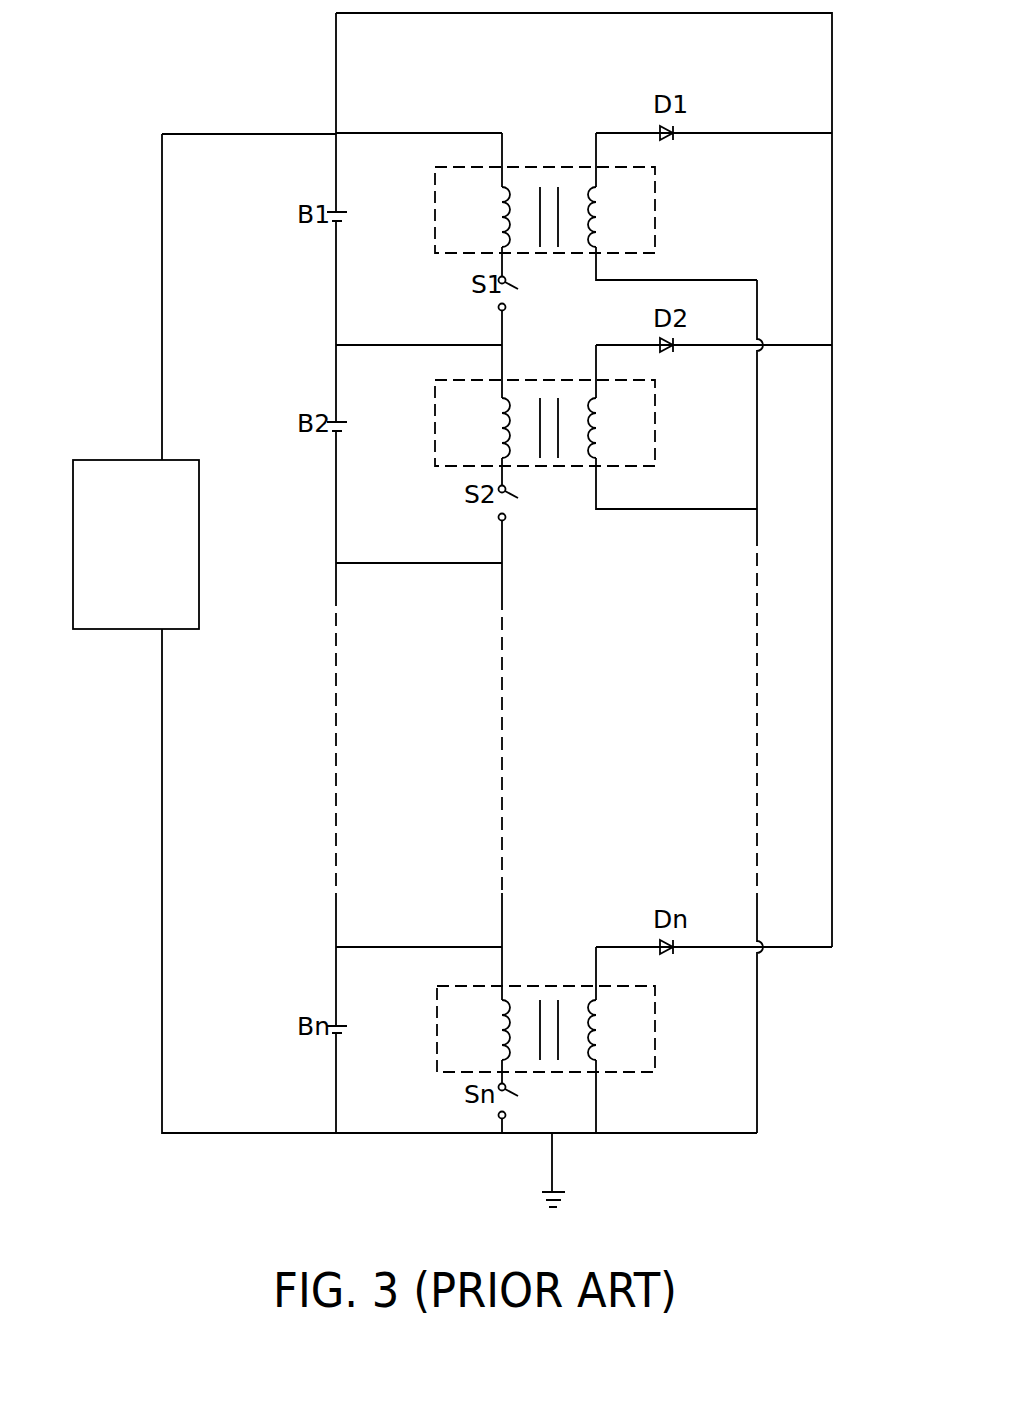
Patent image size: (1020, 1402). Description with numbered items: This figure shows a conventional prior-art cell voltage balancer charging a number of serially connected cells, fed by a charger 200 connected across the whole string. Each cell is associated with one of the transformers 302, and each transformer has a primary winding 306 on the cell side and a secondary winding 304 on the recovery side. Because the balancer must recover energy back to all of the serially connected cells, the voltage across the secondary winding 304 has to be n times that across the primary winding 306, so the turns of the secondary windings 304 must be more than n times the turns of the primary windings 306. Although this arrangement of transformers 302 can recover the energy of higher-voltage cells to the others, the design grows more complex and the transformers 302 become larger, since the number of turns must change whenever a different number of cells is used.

The charger 200 is at (146, 460).
The transformer 302 is at (553, 986).
The secondary winding 304 is at (603, 205).
The primary winding 306 is at (418, 1063).